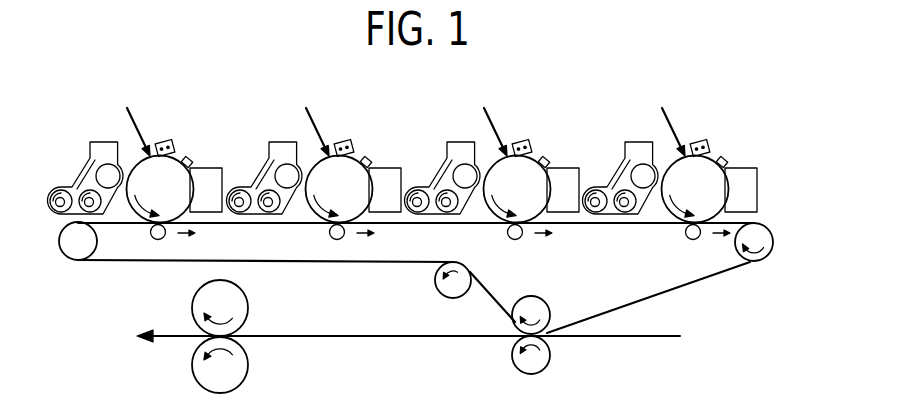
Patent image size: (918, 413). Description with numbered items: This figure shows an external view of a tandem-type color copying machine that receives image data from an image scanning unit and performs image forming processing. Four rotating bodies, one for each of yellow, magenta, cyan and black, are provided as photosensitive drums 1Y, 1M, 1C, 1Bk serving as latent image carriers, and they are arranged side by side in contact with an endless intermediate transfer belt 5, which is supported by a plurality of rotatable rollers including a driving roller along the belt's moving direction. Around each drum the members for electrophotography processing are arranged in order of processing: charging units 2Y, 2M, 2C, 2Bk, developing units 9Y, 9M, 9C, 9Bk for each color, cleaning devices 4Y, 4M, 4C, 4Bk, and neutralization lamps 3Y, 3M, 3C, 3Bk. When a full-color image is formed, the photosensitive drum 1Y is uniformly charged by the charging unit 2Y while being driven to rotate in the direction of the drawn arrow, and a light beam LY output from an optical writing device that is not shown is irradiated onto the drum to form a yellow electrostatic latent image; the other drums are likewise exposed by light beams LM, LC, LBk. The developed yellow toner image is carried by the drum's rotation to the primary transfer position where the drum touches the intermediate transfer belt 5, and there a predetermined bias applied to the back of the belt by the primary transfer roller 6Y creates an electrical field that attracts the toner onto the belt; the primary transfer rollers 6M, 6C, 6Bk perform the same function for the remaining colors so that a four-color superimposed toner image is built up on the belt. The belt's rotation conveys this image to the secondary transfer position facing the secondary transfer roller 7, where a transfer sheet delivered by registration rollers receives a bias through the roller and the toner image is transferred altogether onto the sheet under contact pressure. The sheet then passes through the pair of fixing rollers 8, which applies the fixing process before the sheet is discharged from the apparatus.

The photosensitive drum 1Y is at (148, 186).
The photosensitive drum 1M is at (339, 189).
The photosensitive drum 1C is at (517, 189).
The photosensitive drum 1Bk is at (695, 189).
The charging unit 2Y is at (166, 139).
The charging unit 2M is at (349, 131).
The charging unit 2C is at (525, 131).
The charging unit 2Bk is at (705, 129).
The neutralization lamp 3Y is at (189, 155).
The neutralization lamp 3M is at (376, 146).
The neutralization lamp 3C is at (552, 146).
The neutralization lamp 3Bk is at (737, 146).
The cleaning device 4Y is at (218, 167).
The cleaning device 4M is at (395, 173).
The cleaning device 4C is at (571, 173).
The cleaning device 4Bk is at (759, 173).
The intermediate transfer belt 5 is at (677, 291).
The primary transfer roller 6Y is at (151, 234).
The primary transfer roller 6M is at (315, 240).
The primary transfer roller 6C is at (494, 240).
The primary transfer roller 6Bk is at (668, 240).
The secondary transfer roller 7 is at (550, 356).
The pair of fixing rollers 8 is at (258, 365).
The developing unit 9Y is at (105, 141).
The developing unit 9M is at (264, 160).
The developing unit 9C is at (442, 160).
The developing unit 9Bk is at (622, 160).
The light beam LY is at (128, 108).
The light beam LM is at (325, 119).
The light beam LC is at (501, 119).
The light beam LBk is at (688, 117).